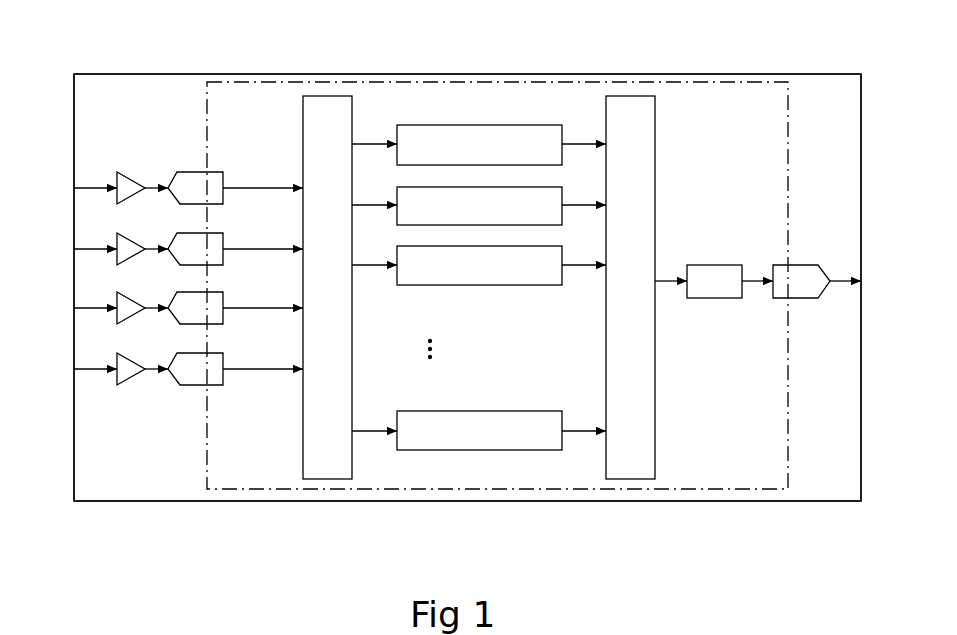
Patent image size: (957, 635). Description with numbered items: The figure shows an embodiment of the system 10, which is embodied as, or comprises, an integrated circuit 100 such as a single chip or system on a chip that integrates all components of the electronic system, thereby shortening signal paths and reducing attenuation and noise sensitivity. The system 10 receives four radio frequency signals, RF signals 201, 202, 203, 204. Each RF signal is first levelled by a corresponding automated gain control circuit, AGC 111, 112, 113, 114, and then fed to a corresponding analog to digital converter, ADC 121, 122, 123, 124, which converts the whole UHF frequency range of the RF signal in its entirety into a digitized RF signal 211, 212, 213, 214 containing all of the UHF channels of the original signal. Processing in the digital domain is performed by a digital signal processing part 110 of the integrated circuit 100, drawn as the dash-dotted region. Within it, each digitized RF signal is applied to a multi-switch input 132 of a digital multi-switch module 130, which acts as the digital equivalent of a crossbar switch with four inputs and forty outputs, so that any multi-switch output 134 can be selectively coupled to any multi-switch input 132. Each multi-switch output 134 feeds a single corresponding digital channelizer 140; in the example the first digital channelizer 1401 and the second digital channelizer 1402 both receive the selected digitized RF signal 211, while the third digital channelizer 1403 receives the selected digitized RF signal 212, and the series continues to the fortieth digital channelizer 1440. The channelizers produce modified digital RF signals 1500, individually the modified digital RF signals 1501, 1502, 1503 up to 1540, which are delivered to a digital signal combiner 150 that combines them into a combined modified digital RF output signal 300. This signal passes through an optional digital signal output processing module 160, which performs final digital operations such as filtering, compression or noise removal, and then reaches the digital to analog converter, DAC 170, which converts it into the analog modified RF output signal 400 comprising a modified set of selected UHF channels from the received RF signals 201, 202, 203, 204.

The system 10 is at (152, 32).
The integrated circuit 100 is at (182, 93).
The digital signal processing part 110 is at (725, 90).
The automated gain control circuit 111 is at (130, 186).
The automated gain control circuit 112 is at (128, 235).
The automated gain control circuit 113 is at (130, 296).
The automated gain control circuit 114 is at (128, 356).
The analog to digital converter 121 is at (188, 188).
The analog to digital converter 122 is at (197, 240).
The analog to digital converter 123 is at (200, 303).
The analog to digital converter 124 is at (195, 357).
The digital multi-switch module 130 is at (318, 102).
The multi-switch input 132 is at (296, 177).
The multi-switch output 134 is at (361, 267).
The digital channelizer 140 is at (442, 114).
The digital channelizer 1401 is at (533, 138).
The second digital channelizer 1402 is at (511, 197).
The third digital channelizer 1403 is at (517, 258).
The digital channelizer 1440 is at (520, 422).
The digital signal combiner 150 is at (643, 113).
The modified digital RF signals 1500 is at (592, 128).
The modified digital RF signal 1501 is at (584, 142).
The modified digital RF signal 1502 is at (587, 203).
The modified digital RF signal 1503 is at (588, 264).
The modified digital RF signal 1540 is at (587, 430).
The digital signal output processing module 160 is at (730, 270).
The digital to analog converter 170 is at (805, 268).
The RF signal 201 is at (84, 186).
The RF signal 202 is at (84, 247).
The RF signal 203 is at (84, 306).
The RF signal 204 is at (84, 367).
The digitized RF signal 211 is at (285, 185).
The digitized RF signal 212 is at (287, 247).
The digitized RF signal 213 is at (287, 307).
The digitized RF signal 214 is at (287, 367).
The combined modified digital RF output signal 300 is at (665, 279).
The modified RF output signal 400 is at (833, 279).